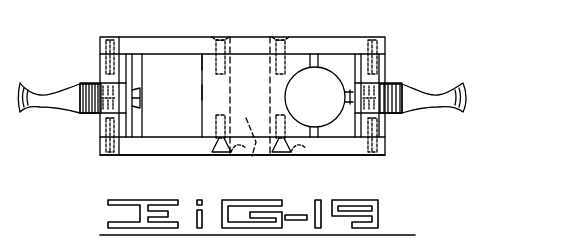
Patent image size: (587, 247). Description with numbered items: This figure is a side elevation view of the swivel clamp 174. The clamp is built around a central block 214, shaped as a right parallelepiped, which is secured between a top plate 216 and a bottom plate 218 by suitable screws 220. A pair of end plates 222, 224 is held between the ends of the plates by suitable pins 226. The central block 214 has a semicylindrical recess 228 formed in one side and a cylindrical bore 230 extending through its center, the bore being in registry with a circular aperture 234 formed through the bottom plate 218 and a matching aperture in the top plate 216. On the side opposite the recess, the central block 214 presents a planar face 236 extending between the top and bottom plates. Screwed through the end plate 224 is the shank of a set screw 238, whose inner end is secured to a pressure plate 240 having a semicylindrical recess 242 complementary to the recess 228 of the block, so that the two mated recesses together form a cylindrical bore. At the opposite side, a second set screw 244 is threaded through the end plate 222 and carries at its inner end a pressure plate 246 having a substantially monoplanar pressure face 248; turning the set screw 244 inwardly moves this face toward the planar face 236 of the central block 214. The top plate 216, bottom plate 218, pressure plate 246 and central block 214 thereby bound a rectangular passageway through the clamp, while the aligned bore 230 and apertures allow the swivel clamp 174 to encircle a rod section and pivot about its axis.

The swivel clamp 174 is at (388, 134).
The central block 214 is at (203, 88).
The top plate 216 is at (178, 42).
The bottom plate 218 is at (146, 140).
The screws 220 is at (283, 36).
The end plate 222 is at (100, 127).
The end plate 224 is at (384, 125).
The pins 226 is at (112, 36).
The semicylindrical recess 228 is at (294, 62).
The cylindrical bore 230 is at (256, 142).
The circular aperture 234 is at (242, 158).
The planar face 236 is at (201, 70).
The set screw 238 is at (428, 88).
The pressure plate 240 is at (342, 58).
The semicylindrical recess 242 is at (330, 69).
The set screw 244 is at (55, 90).
The pressure plate 246 is at (130, 127).
The pressure face 248 is at (143, 68).